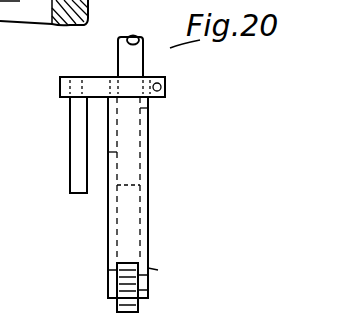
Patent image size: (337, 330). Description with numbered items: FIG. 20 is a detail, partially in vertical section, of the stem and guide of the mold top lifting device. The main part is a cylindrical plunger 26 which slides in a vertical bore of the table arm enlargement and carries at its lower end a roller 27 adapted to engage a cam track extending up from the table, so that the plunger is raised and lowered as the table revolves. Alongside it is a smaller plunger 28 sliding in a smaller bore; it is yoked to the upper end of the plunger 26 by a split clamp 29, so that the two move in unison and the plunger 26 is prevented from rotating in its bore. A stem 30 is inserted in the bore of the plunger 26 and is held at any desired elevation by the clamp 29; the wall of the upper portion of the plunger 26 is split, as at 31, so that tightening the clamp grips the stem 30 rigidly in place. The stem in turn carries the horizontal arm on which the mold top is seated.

The cylindrical plunger 26 is at (135, 167).
The roller 27 is at (118, 307).
The smaller plunger 28 is at (70, 133).
The split clamp 29 is at (60, 86).
The stem 30 is at (118, 53).
The split 31 is at (150, 108).